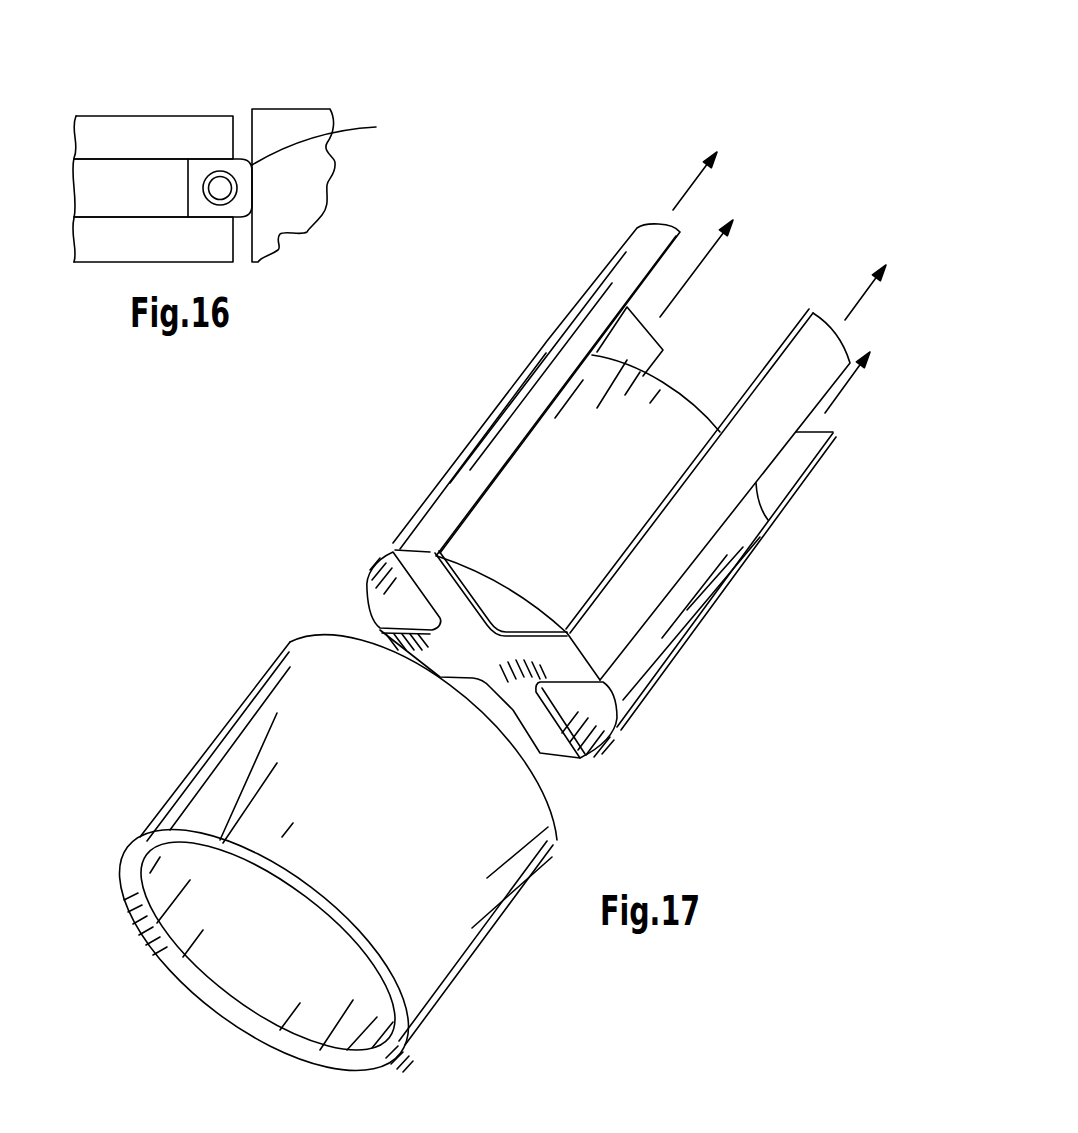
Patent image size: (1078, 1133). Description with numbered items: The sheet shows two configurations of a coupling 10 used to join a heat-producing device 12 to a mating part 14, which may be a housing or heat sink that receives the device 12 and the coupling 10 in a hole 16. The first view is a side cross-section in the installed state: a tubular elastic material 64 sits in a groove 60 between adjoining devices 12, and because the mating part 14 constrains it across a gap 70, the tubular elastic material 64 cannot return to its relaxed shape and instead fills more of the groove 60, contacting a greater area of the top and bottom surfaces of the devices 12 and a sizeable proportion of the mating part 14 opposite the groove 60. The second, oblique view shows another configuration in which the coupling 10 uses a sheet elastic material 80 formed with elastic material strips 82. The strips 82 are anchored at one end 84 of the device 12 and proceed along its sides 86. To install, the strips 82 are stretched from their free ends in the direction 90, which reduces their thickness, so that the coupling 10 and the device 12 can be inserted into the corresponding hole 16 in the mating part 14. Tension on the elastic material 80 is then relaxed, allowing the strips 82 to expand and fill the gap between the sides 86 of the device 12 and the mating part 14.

In FIG. 17, the coupling 10 is at (394, 425).
In FIG. 16, the device 12 is at (118, 118).
In FIG. 17, the device 12 is at (770, 587).
In FIG. 16, the mating part 14 is at (305, 118).
In FIG. 17, the mating part 14 is at (225, 743).
In FIG. 17, the hole 16 is at (226, 963).
In FIG. 16, the groove 60 is at (288, 176).
In FIG. 16, the tubular elastic material 64 is at (328, 141).
In FIG. 16, the gap 70 is at (249, 88).
In FIG. 17, the sheet elastic material 80 is at (378, 505).
In FIG. 17, the elastic material strips 82 is at (625, 343).
In FIG. 17, the end of device 84 is at (603, 742).
In FIG. 17, the sides of device 86 is at (652, 573).
In FIG. 17, the direction of stretching 90 is at (814, 234).